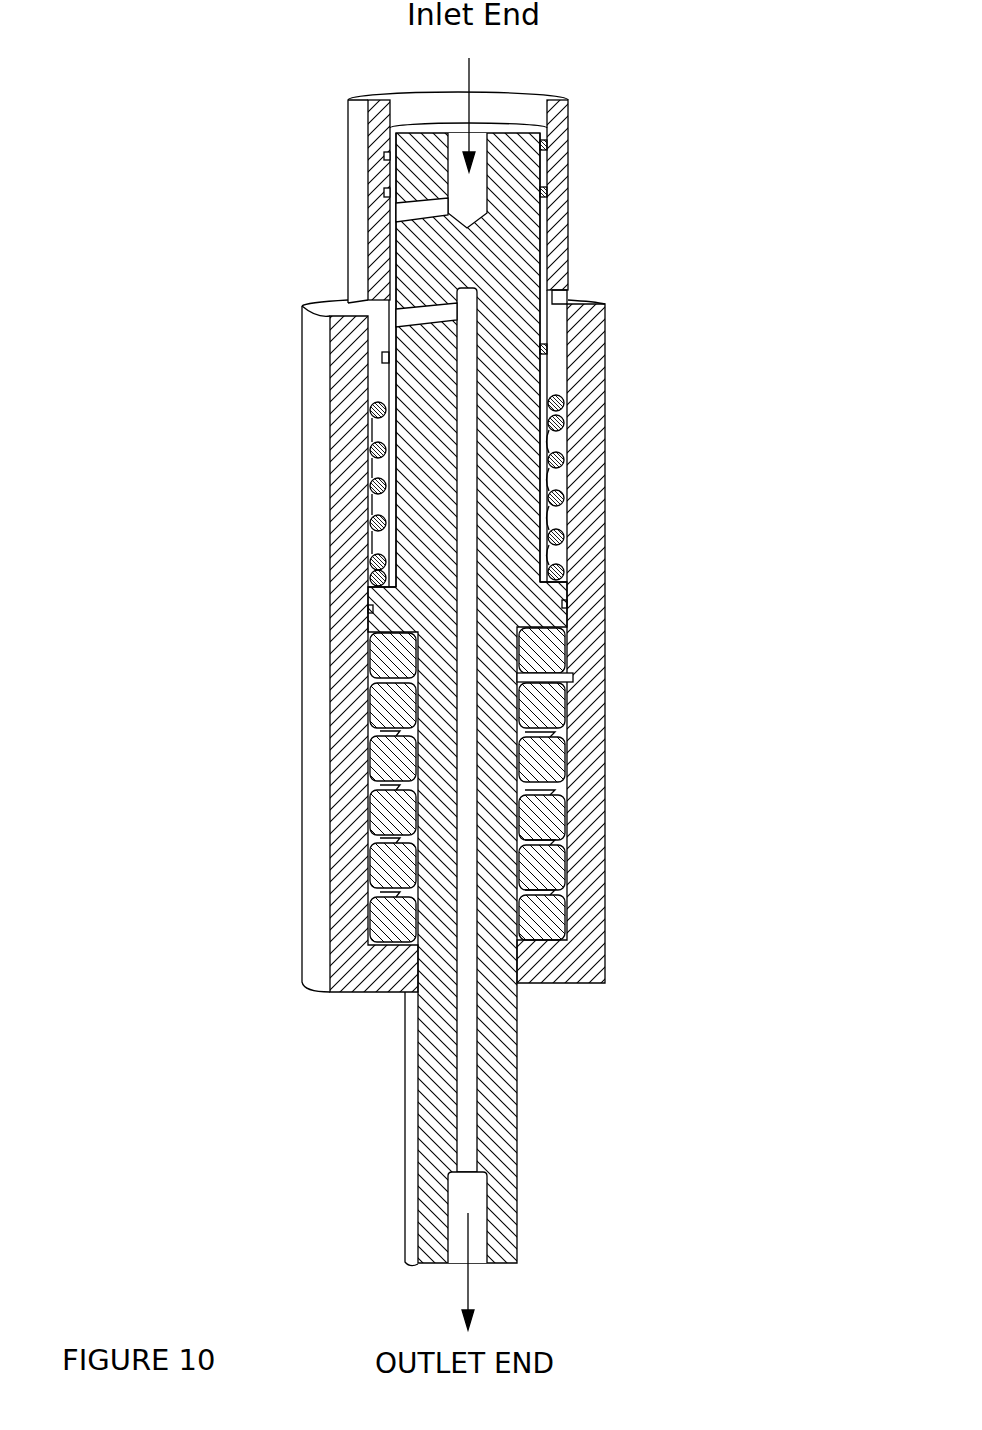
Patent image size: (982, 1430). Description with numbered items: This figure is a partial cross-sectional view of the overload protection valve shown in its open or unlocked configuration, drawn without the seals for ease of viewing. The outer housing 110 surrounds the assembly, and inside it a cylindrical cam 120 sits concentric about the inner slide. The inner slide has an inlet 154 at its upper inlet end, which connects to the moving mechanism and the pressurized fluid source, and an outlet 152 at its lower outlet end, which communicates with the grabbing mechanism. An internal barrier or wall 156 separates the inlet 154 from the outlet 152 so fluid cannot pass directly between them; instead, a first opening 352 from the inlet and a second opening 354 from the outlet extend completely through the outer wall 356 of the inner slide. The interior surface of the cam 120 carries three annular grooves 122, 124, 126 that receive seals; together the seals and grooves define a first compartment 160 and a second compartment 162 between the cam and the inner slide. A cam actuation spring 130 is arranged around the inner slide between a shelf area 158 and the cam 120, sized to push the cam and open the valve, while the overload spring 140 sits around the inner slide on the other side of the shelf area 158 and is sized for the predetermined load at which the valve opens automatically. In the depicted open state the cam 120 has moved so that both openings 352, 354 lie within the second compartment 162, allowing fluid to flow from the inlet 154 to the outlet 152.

The outer housing 110 is at (607, 752).
The cam 120 is at (607, 543).
The groove 122 is at (548, 143).
The groove 124 is at (548, 192).
The groove 126 is at (548, 348).
The cam actuation spring 130 is at (557, 505).
The overload spring 140 is at (520, 843).
The outlet 152 is at (478, 1296).
The inlet 154 is at (480, 70).
The internal barrier or wall 156 is at (508, 256).
The shelf area 158 is at (568, 620).
The first compartment 160 is at (392, 175).
The second compartment 162 is at (390, 300).
The first opening 352 is at (405, 215).
The second opening 354 is at (408, 315).
The outer wall 356 is at (410, 143).